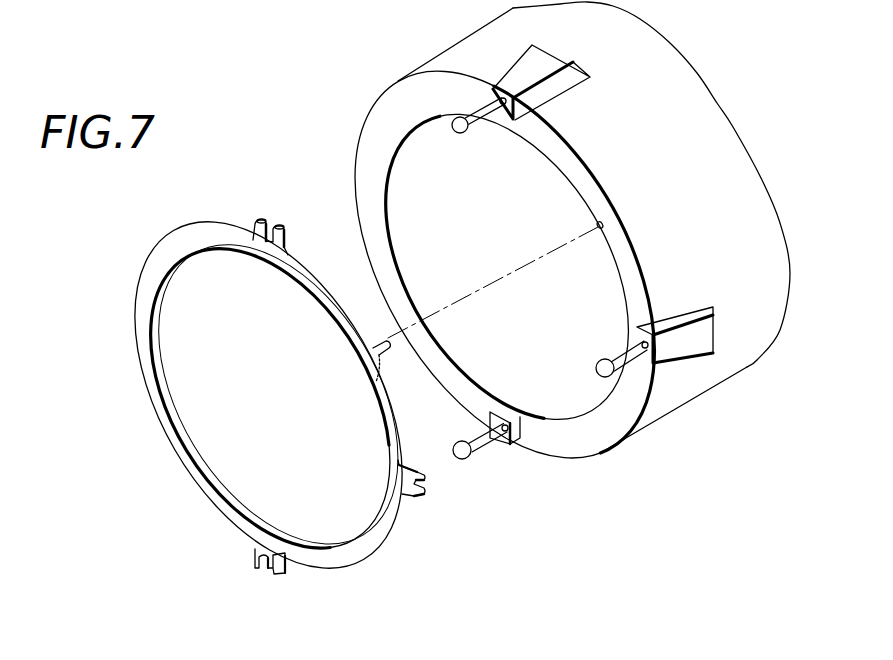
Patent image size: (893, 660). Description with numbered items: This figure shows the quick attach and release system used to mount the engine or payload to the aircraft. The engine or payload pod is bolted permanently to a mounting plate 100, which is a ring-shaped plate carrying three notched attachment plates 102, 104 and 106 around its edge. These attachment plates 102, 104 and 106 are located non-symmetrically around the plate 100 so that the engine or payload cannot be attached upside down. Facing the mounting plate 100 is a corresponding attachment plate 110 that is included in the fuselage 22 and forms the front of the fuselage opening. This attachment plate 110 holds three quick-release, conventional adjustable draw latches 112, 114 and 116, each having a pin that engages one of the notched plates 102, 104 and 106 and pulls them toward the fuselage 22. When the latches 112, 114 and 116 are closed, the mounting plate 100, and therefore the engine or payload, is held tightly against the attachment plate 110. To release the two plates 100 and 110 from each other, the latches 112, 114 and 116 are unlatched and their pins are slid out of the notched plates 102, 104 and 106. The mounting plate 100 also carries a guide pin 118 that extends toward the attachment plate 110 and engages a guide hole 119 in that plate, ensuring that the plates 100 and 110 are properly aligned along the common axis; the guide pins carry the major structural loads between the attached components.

The fuselage 22 is at (735, 138).
The mounting plate 100 is at (147, 282).
The notched attachment plate 102 is at (263, 572).
The notched attachment plate 104 is at (272, 223).
The notched attachment plate 106 is at (420, 497).
The attachment plate 110 is at (366, 110).
The adjustable draw latch 112 is at (507, 80).
The adjustable draw latch 114 is at (470, 457).
The adjustable draw latch 116 is at (463, 134).
The guide pin 118 is at (377, 386).
The guide hole 119 is at (603, 223).